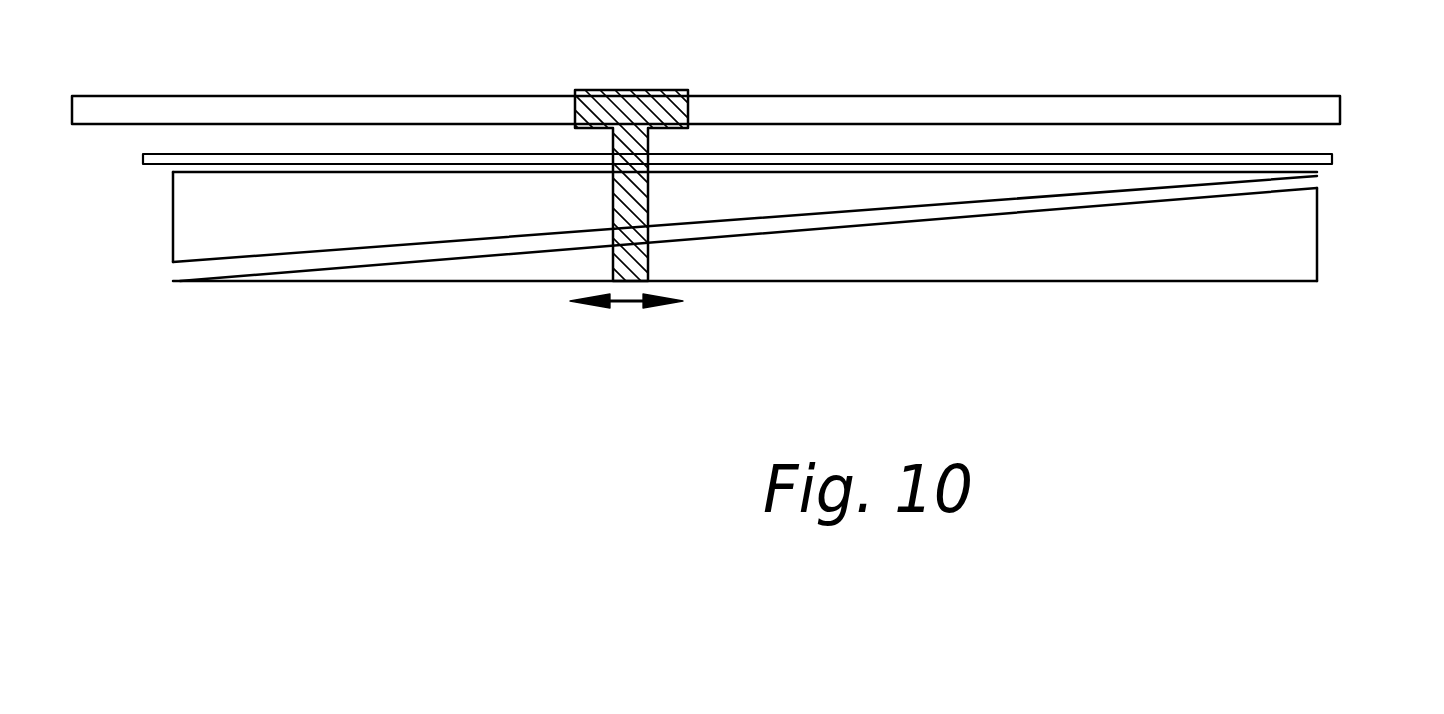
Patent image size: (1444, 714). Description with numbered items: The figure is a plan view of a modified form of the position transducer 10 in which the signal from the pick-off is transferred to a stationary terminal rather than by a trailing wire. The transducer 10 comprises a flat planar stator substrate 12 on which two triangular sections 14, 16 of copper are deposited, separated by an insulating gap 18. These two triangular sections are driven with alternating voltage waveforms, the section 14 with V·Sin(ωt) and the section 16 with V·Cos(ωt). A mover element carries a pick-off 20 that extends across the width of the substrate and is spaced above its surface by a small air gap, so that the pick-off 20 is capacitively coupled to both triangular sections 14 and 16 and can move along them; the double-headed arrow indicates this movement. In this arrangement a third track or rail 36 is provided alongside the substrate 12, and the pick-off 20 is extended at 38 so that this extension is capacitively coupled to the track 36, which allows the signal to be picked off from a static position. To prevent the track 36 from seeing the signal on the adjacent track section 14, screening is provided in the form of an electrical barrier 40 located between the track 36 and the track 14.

The position transducer 10 is at (142, 298).
The stator substrate 12 is at (928, 307).
The triangular section 14 is at (190, 233).
The triangular section 16 is at (1312, 263).
The insulating gap 18 is at (1318, 181).
The pick-off 20 is at (613, 263).
The third track 36 is at (1341, 97).
The pick-off extension 38 is at (637, 96).
The electrical barrier 40 is at (1331, 157).